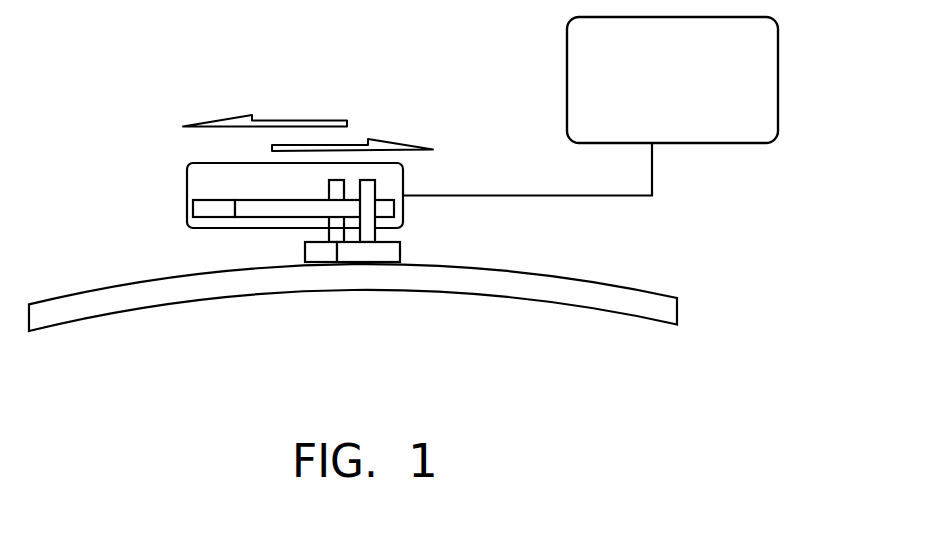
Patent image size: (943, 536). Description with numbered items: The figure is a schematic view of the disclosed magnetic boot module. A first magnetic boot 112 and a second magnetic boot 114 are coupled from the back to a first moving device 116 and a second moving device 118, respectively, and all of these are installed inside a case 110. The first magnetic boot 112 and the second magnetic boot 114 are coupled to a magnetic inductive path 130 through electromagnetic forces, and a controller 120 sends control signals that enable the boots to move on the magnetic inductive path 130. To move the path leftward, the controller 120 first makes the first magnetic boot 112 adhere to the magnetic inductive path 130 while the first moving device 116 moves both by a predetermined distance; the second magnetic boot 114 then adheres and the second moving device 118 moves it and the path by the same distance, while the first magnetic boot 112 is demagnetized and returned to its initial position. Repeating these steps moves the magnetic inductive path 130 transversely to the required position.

The case 110 is at (187, 192).
The first magnetic boot 112 is at (400, 249).
The second magnetic boot 114 is at (305, 247).
The first moving device 116 is at (268, 218).
The second moving device 118 is at (212, 217).
The controller 120 is at (778, 78).
The magnetic inductive path 130 is at (630, 288).